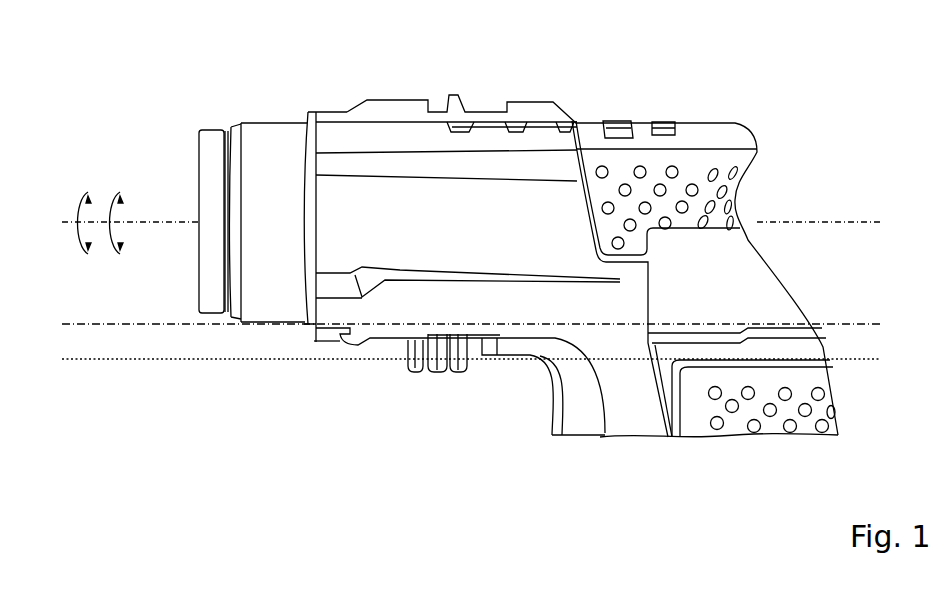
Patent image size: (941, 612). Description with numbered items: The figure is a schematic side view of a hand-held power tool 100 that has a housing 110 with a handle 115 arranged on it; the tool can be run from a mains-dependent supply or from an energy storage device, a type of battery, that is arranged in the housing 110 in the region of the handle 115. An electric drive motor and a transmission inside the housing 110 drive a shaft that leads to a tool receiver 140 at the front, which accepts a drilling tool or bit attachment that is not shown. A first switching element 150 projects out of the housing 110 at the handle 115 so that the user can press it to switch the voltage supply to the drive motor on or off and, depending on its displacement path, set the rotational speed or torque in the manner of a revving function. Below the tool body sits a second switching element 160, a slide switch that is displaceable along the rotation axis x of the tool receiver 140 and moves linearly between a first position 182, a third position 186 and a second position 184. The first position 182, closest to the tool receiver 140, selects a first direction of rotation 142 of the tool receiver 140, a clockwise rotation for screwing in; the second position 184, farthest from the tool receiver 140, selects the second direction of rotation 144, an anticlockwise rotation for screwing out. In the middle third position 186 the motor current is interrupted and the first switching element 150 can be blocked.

The hand-held power tool 100 is at (824, 70).
The housing 110 is at (538, 112).
The handle 115 is at (768, 430).
The tool receiver 140 is at (203, 242).
The first direction of rotation 142 is at (83, 191).
The second direction of rotation 144 is at (113, 191).
The first switching element 150 is at (580, 425).
The second switching element 160 is at (405, 353).
The first position 182 is at (410, 376).
The second position 184 is at (462, 379).
The third position 186 is at (435, 379).